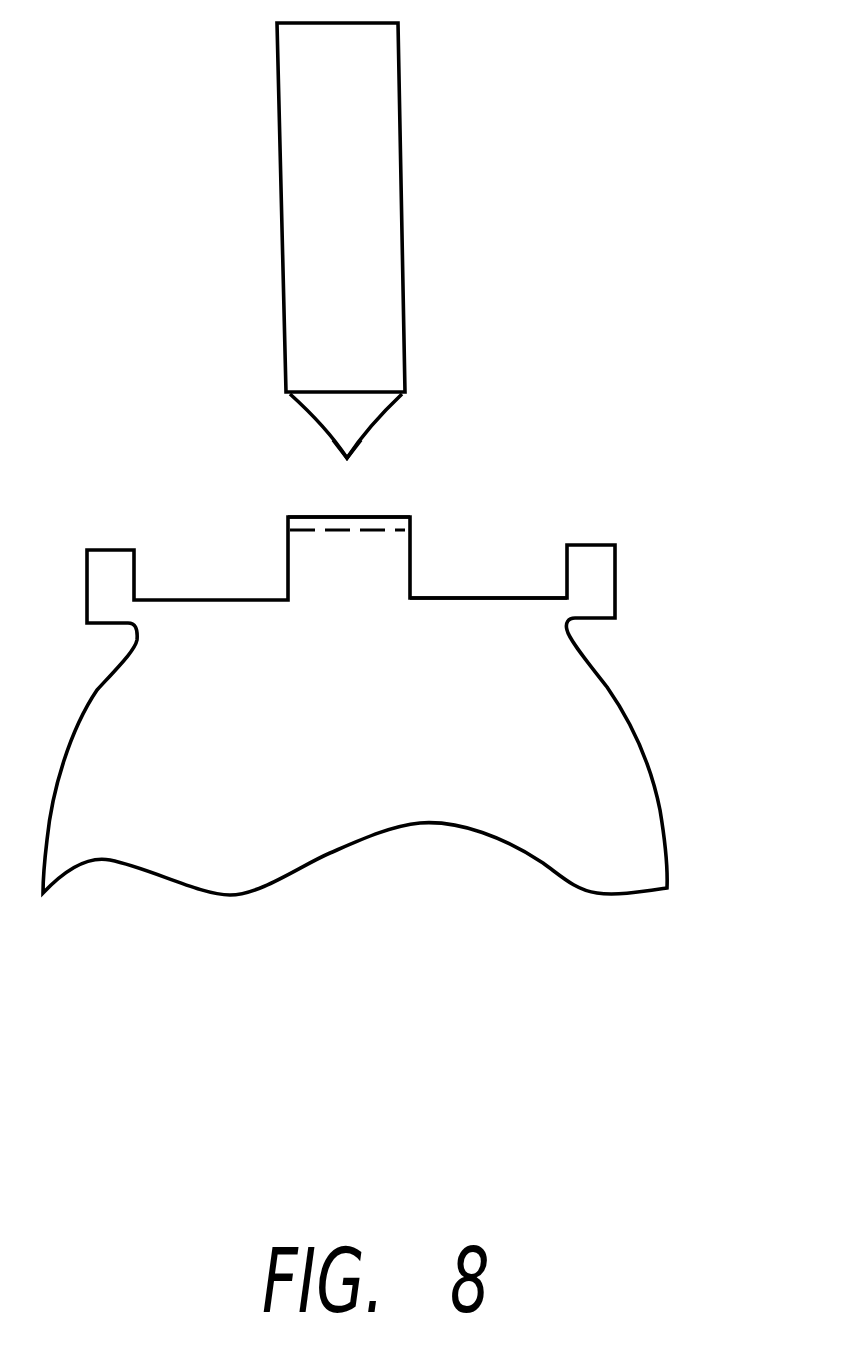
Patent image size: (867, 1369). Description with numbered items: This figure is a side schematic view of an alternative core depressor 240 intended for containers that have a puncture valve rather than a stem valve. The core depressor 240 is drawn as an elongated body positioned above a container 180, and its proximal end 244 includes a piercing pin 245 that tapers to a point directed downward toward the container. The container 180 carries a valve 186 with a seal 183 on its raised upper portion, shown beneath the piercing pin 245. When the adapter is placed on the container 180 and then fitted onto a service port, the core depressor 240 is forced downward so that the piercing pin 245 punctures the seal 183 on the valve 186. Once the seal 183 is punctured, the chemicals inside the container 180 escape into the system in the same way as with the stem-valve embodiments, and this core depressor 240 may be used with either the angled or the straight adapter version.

The container 180 is at (712, 766).
The seal 183 is at (392, 522).
The valve 186 is at (412, 545).
The core depressor 240 is at (495, 127).
The proximal end 244 is at (498, 337).
The piercing pin 245 is at (353, 413).